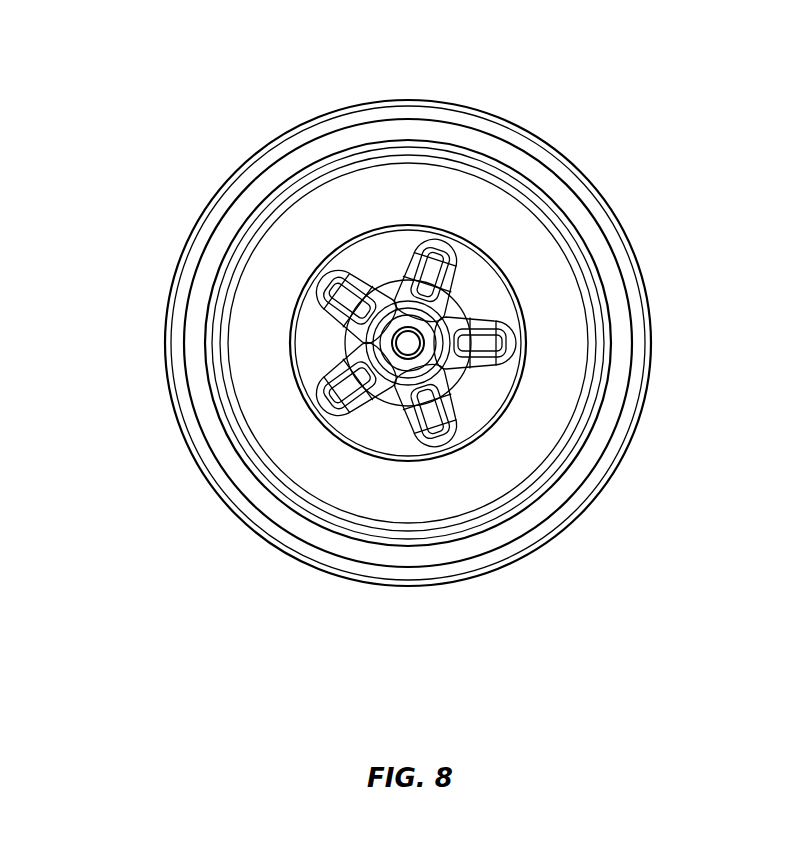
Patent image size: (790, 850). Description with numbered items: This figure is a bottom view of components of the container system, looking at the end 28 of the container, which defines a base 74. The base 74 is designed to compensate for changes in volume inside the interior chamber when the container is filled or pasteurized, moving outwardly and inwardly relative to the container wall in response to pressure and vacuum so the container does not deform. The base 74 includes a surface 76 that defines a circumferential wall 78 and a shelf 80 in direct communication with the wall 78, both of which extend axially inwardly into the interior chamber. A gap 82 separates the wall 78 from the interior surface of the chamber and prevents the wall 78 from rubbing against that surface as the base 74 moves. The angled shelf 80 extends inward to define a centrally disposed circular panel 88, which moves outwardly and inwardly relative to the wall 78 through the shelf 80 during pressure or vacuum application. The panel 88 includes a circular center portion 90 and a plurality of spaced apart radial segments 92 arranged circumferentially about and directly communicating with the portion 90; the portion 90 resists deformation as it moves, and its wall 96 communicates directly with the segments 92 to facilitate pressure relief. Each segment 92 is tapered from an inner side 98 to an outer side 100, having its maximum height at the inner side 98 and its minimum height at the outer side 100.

The end 28 is at (85, 108).
The base 74 is at (513, 467).
The surface 76 is at (533, 243).
The circumferential wall 78 is at (232, 245).
The shelf 80 is at (287, 243).
The gap 82 is at (188, 417).
The circular panel 88 is at (375, 253).
The circular center portion 90 is at (405, 350).
The radial segments 92 is at (438, 262).
The wall 96 is at (392, 329).
The inner side 98 is at (470, 302).
The outer side 100 is at (483, 352).